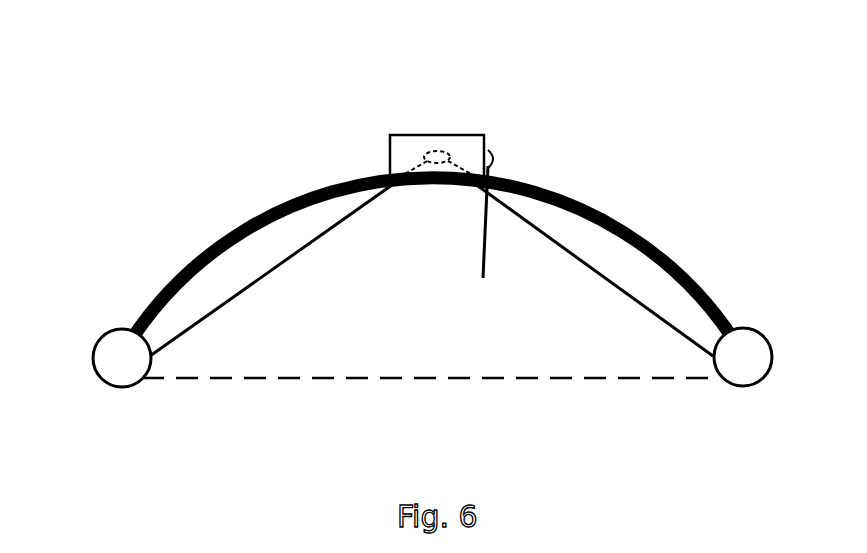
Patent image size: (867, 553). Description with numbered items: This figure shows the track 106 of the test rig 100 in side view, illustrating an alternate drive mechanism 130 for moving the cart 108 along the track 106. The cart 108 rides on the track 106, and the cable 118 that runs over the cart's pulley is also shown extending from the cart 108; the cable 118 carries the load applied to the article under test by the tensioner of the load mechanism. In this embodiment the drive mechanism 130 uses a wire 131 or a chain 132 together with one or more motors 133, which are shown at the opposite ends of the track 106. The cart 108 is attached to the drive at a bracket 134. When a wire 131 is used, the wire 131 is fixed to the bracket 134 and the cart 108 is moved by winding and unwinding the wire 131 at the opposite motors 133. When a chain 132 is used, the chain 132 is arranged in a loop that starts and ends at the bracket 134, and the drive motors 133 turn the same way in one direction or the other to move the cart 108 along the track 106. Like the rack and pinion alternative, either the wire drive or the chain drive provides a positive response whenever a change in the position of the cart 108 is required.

The test rig 100 is at (430, 264).
The track 106 is at (633, 232).
The cart 108 is at (458, 134).
The cable 118 is at (482, 247).
The drive mechanism 130 is at (430, 343).
The wire 131 is at (262, 277).
The chain 132 is at (462, 378).
The motors 133 is at (105, 333).
The bracket 134 is at (432, 152).